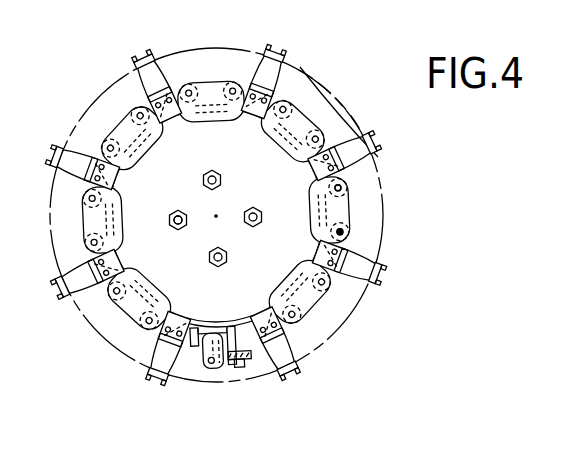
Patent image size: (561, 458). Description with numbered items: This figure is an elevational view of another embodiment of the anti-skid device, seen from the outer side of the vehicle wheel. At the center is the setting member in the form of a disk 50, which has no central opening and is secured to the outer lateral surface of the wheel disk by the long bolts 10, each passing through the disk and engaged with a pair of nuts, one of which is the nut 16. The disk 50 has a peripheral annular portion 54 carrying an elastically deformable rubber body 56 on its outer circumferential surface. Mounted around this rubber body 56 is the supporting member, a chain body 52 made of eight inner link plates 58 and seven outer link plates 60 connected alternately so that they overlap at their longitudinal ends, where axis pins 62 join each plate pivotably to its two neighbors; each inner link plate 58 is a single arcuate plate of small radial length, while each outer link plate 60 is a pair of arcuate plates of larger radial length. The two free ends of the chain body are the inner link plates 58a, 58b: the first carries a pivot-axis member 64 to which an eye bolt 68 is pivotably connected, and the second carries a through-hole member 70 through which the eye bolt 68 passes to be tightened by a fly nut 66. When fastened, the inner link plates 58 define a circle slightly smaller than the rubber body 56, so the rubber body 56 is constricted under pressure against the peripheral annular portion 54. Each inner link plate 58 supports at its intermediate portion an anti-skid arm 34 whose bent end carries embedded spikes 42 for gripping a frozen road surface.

The long bolt 10 is at (172, 226).
The nut 16 is at (175, 211).
The anti-skid arm 34 is at (343, 147).
The spike 42 is at (55, 288).
The disk 50 is at (270, 157).
The chain body 52 is at (115, 104).
The peripheral annular portion 54 is at (350, 278).
The rubber body 56 is at (272, 78).
The inner link plate 58 is at (343, 180).
The free-end inner link plate 58a is at (190, 336).
The free-end inner link plate 58b is at (233, 338).
The outer link plate 60 is at (337, 212).
The axis pin 62 is at (341, 189).
The pivot-axis member 64 is at (197, 350).
The fly nut 66 is at (233, 372).
The eye bolt 68 is at (245, 362).
The through-hole member 70 is at (229, 368).